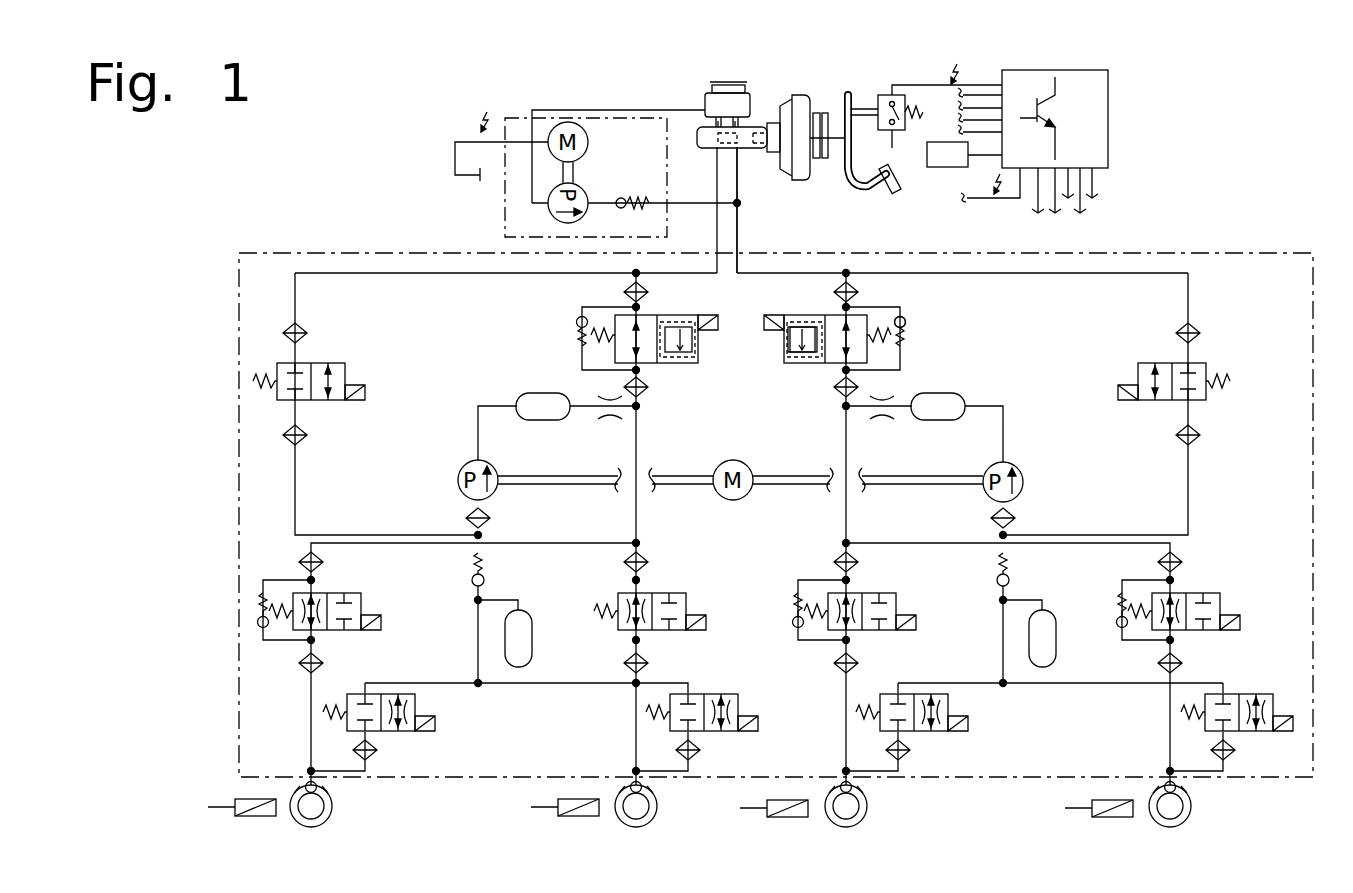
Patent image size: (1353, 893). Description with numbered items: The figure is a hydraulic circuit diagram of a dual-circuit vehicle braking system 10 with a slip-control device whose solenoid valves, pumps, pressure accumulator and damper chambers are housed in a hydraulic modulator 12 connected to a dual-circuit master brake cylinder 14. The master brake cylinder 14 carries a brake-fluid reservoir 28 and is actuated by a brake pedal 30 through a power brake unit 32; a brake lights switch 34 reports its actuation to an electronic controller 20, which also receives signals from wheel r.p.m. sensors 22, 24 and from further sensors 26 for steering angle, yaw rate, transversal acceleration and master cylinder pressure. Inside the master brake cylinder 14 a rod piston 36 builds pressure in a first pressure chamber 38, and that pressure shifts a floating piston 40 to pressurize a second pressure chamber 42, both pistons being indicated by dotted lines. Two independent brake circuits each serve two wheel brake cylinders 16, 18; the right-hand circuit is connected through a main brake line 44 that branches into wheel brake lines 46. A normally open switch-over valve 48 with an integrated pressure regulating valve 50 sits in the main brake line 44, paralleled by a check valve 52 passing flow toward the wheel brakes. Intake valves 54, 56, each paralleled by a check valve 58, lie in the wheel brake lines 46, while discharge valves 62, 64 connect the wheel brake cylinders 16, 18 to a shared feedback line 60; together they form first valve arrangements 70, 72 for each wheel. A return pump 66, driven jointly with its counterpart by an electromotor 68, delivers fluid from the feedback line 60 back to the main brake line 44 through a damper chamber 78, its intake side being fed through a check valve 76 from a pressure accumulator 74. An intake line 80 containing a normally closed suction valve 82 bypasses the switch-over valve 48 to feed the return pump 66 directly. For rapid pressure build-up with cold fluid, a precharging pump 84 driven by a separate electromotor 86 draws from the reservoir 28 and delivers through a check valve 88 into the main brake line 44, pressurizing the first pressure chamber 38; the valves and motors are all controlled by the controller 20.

The hydraulic vehicle braking system 10 is at (351, 214).
The hydraulic modulator 12 is at (239, 466).
The dual-circuit master brake cylinder 14 is at (759, 155).
The wheel brake cylinder 16 is at (1187, 795).
The wheel brake cylinder 18 is at (862, 795).
The electronic controller 20 is at (1108, 88).
The wheel r.p.m. sensor 22 is at (1096, 802).
The wheel r.p.m. sensor 24 is at (770, 802).
The further sensors 26 is at (940, 166).
The reservoir 28 is at (740, 94).
The brake pedal 30 is at (898, 192).
The power brake unit 32 is at (805, 166).
The brake lights switch 34 is at (880, 95).
The rod piston 36 is at (774, 126).
The first pressure chamber 38 is at (756, 129).
The floating piston 40 is at (709, 127).
The second pressure chamber 42 is at (698, 134).
The main brake line 44 is at (740, 188).
The wheel brake line 46 is at (927, 543).
The switch-over valve 48 is at (862, 320).
The pressure regulating valve 50 is at (808, 350).
The check valve 52 is at (906, 326).
The intake valve 54 is at (1187, 597).
The intake valve 56 is at (866, 597).
The check valve 58 is at (791, 620).
The feedback line 60 is at (1003, 632).
The discharge valve 62 is at (1232, 728).
The discharge valve 64 is at (906, 728).
The return pump 66 is at (1023, 471).
The electromotor 68 is at (741, 461).
The first valve arrangement 70 is at (1250, 617).
The first valve arrangement 72 is at (923, 619).
The pressure accumulator 74 is at (1050, 650).
The check valve 76 is at (1010, 582).
The damper chamber 78 is at (955, 398).
The intake line 80 is at (1188, 510).
The suction valve 82 is at (1140, 378).
The precharging pump 84 is at (560, 212).
The electromotor 86 is at (572, 124).
The check valve 88 is at (622, 197).